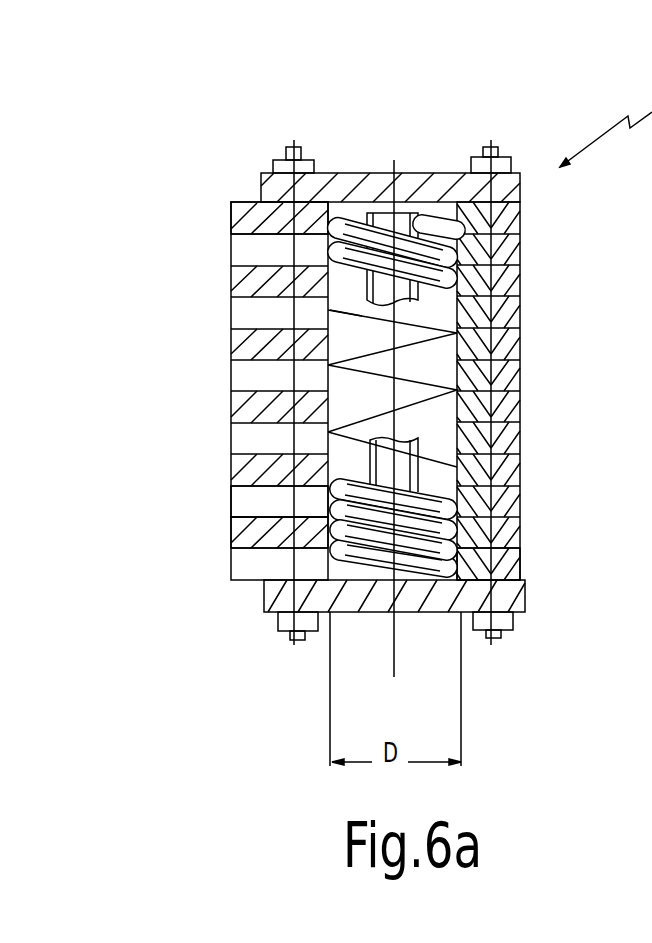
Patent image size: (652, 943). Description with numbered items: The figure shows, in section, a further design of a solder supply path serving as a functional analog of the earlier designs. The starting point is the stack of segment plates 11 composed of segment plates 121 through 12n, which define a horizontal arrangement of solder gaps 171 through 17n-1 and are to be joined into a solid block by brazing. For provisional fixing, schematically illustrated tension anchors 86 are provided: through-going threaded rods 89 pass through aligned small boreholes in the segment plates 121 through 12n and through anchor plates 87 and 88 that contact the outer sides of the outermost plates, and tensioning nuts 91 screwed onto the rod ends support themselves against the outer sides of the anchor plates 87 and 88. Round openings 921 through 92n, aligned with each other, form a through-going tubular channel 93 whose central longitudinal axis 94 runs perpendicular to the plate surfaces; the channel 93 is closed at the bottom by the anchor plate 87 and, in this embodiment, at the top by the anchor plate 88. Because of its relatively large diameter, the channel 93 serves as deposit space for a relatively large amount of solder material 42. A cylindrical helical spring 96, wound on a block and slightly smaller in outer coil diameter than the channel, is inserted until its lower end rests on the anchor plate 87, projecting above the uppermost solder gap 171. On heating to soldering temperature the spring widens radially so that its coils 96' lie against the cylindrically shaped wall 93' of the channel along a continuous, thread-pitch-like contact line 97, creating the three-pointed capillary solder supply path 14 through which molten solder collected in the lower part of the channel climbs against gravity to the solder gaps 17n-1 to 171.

The stack of segment plates 11 is at (228, 202).
The segment plate 121 is at (516, 211).
The segment plate 12n is at (503, 563).
The capillary solder supply path 14 is at (324, 497).
The solder gap 171 is at (231, 236).
The solder gap 17n-1 is at (233, 552).
The solder material 42 is at (405, 466).
The tension anchor 86 is at (270, 156).
The anchor plate 87 is at (266, 598).
The anchor plate 88 is at (275, 188).
The threaded rod 89 is at (298, 146).
The tensioning nut 91 is at (306, 166).
The round opening 921 is at (455, 218).
The round opening 92n is at (440, 560).
The channel 93 is at (476, 388).
The cylindrically shaped wall 93' is at (246, 319).
The central longitudinal axis 94 is at (395, 643).
The helical spring 96 is at (476, 265).
The coils 96' is at (471, 514).
The contact line 97 is at (425, 378).